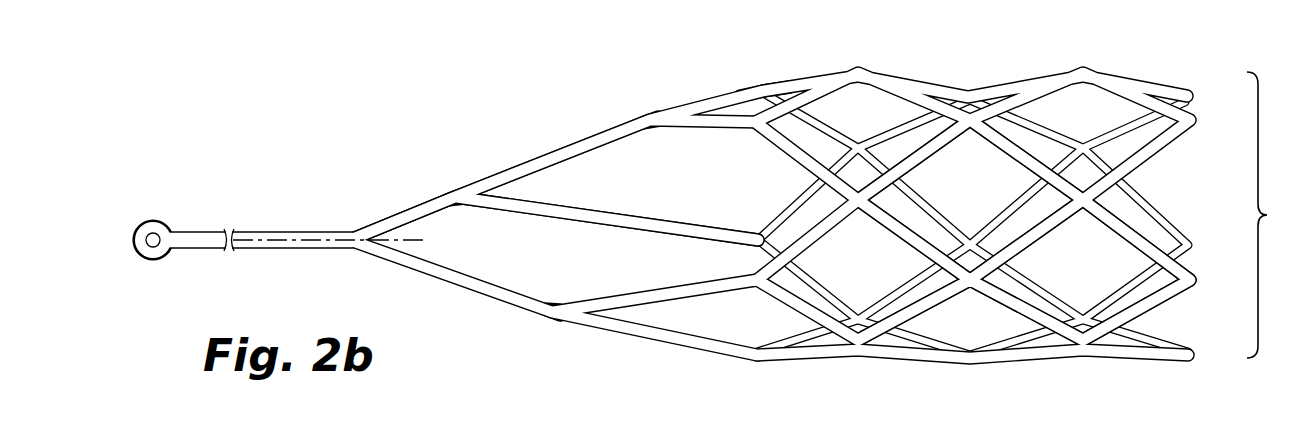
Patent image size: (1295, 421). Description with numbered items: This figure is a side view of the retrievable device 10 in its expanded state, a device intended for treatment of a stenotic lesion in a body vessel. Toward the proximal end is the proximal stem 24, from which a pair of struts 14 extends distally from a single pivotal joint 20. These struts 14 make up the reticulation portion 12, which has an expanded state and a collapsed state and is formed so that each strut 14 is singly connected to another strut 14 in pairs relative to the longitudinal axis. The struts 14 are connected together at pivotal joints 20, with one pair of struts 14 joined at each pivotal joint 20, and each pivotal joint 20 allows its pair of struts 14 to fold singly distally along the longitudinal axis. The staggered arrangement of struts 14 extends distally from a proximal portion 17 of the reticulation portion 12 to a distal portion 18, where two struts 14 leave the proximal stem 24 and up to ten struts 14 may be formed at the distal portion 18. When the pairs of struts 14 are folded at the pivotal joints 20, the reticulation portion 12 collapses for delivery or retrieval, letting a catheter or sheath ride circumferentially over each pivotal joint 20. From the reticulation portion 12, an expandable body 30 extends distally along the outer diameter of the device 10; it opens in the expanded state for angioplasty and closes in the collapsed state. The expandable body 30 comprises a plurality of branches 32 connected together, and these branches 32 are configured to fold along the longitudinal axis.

The retrievable device 10 is at (661, 205).
The reticulation portion 12 is at (545, 141).
The struts 14 is at (600, 113).
The proximal portion 17 is at (416, 206).
The distal portion 18 is at (747, 91).
The pivotal joints 20 is at (351, 231).
The proximal stem 24 is at (258, 232).
The expandable body 30 is at (870, 70).
The branches 32 is at (1006, 201).